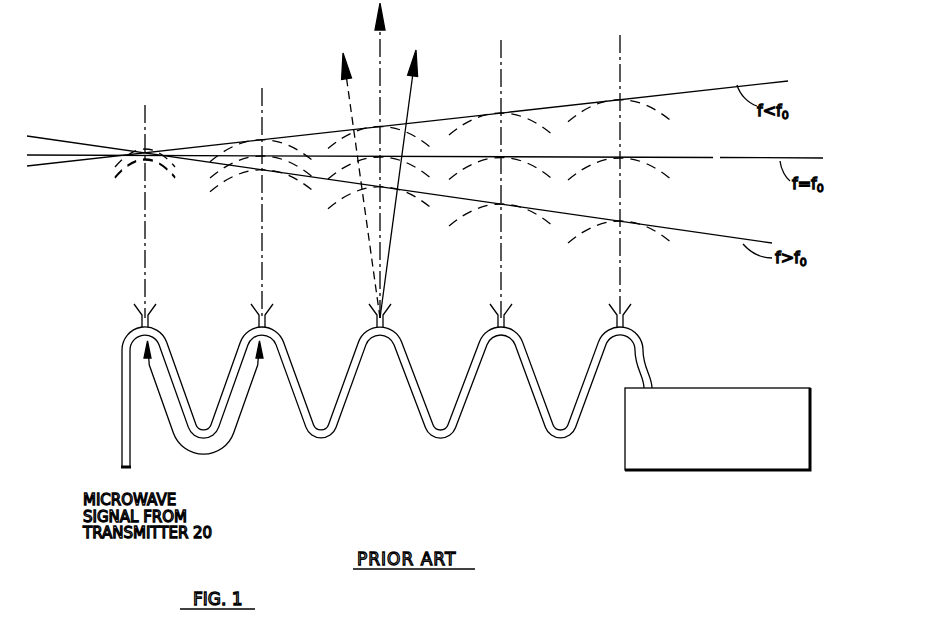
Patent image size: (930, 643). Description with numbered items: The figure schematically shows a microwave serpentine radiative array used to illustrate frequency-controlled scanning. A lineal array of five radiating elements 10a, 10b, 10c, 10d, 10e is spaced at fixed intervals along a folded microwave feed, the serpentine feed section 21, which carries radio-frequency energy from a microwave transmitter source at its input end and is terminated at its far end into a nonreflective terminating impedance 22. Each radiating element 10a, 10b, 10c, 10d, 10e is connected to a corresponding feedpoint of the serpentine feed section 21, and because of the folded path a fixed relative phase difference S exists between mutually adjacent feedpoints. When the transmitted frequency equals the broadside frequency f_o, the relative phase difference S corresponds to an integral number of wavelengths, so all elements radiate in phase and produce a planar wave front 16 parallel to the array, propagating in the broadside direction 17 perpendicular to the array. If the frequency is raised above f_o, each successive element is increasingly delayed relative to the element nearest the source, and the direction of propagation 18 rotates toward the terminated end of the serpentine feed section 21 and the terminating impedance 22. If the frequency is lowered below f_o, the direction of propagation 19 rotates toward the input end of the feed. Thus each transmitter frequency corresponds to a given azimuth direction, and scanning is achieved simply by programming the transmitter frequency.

The radiating element 10a is at (141, 323).
The radiating element 10b is at (258, 323).
The radiating element 10c is at (376, 323).
The radiating element 10d is at (497, 323).
The radiating element 10e is at (616, 323).
The planar wave front 16 is at (720, 159).
The broadside direction 17 is at (383, 54).
The direction of propagation for f greater than f_o 18 is at (412, 99).
The direction of propagation for f less than f_o 19 is at (347, 99).
The serpentine feed section 21 is at (642, 356).
The terminating impedance 22 is at (738, 445).
The relative phase difference S is at (221, 450).